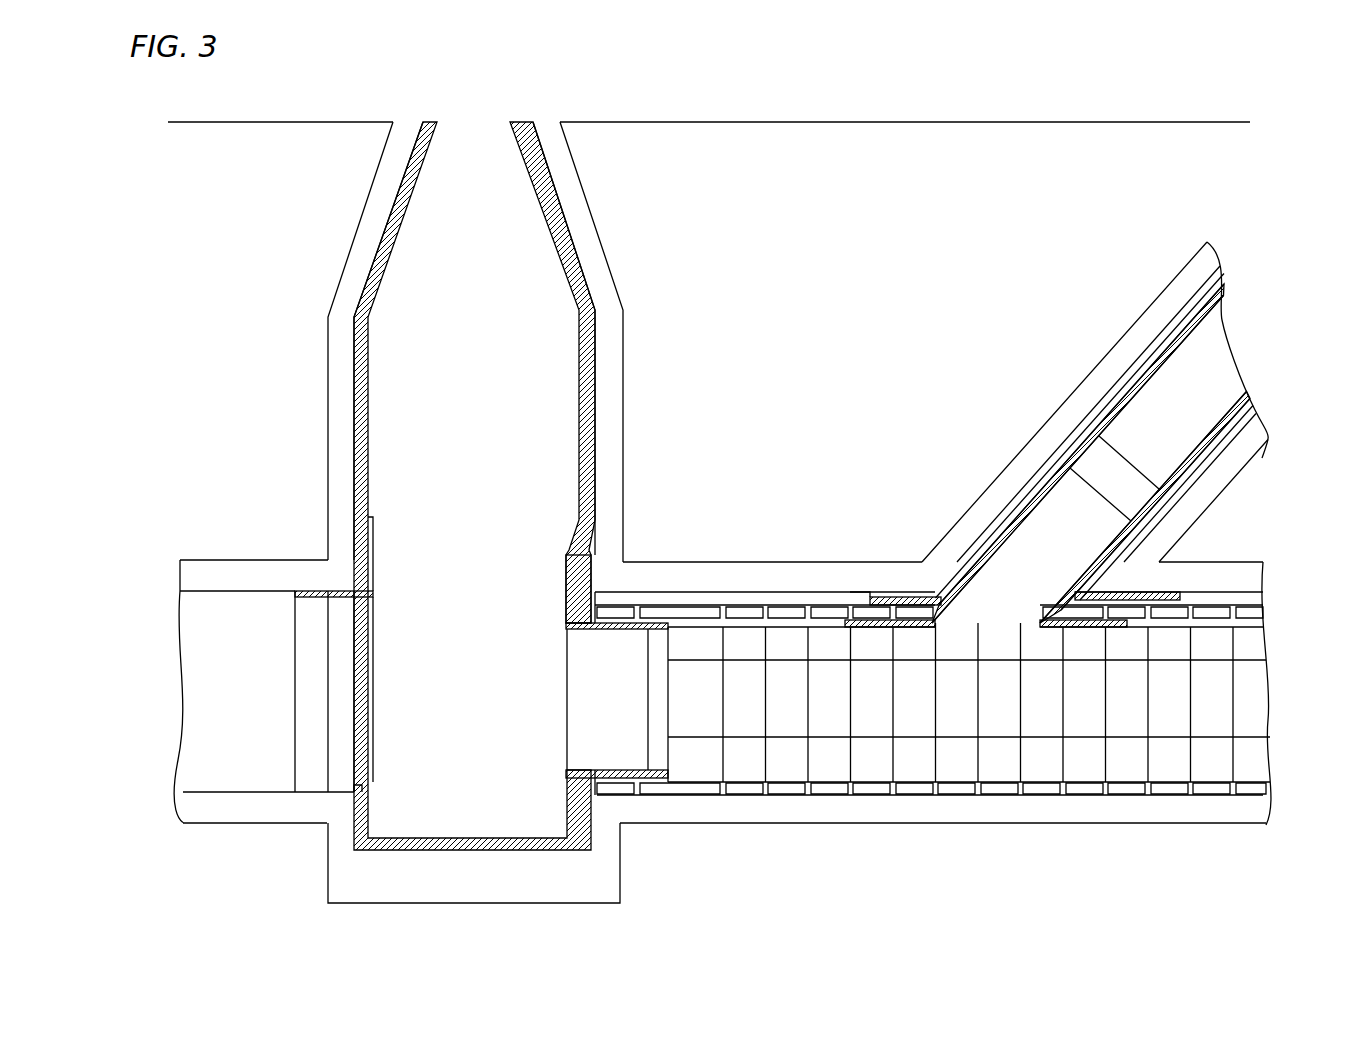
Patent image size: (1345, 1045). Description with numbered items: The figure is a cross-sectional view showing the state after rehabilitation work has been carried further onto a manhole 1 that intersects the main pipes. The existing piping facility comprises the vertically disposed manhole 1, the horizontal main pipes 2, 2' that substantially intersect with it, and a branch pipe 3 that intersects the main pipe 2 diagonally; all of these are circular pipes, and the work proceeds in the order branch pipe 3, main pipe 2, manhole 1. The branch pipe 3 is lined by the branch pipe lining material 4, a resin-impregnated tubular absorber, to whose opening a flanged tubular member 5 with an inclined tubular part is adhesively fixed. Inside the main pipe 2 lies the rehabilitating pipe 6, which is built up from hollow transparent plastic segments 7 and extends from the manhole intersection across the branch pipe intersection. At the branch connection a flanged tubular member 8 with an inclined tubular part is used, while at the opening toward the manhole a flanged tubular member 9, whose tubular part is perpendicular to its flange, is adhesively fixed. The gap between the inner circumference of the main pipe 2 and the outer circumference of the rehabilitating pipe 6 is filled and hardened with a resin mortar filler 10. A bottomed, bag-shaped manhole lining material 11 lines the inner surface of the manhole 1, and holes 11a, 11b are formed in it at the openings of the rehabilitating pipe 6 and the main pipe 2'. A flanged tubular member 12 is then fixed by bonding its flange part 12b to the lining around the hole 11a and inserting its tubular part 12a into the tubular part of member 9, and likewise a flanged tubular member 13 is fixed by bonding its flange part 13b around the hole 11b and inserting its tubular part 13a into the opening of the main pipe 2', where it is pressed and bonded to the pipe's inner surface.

The manhole 1 is at (573, 222).
The main pipe 2 is at (933, 661).
The main pipe 2' is at (264, 659).
The branch pipe 3 is at (1160, 315).
The branch pipe lining material 4 is at (1137, 395).
The flanged tubular member 5 is at (1128, 483).
The rehabilitating pipe 6 is at (1078, 768).
The segment 7 is at (822, 727).
The flanged tubular member 8 is at (1047, 553).
The flanged tubular member 9 is at (658, 673).
The filler 10 is at (768, 596).
The manhole lining material 11 is at (575, 385).
The hole 11a is at (578, 775).
The hole 11b is at (362, 790).
The flanged tubular member 12 is at (605, 702).
The tubular part 12a is at (575, 641).
The flange part 12b is at (565, 595).
The flanged tubular member 13 is at (333, 643).
The tubular part 13a is at (337, 595).
The flange part 13b is at (365, 546).